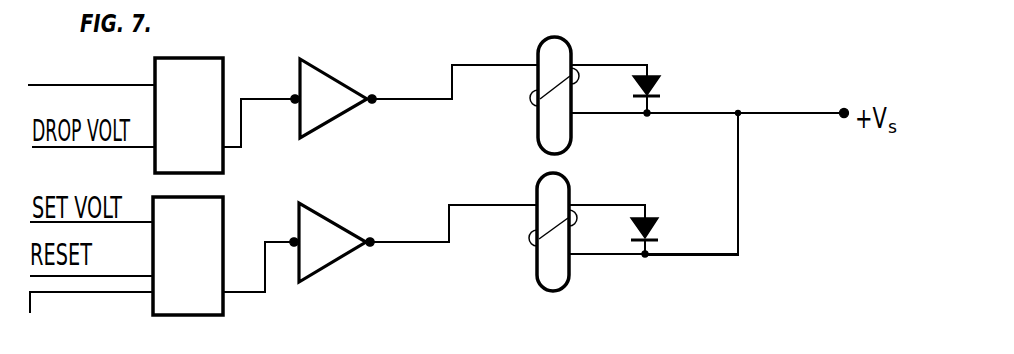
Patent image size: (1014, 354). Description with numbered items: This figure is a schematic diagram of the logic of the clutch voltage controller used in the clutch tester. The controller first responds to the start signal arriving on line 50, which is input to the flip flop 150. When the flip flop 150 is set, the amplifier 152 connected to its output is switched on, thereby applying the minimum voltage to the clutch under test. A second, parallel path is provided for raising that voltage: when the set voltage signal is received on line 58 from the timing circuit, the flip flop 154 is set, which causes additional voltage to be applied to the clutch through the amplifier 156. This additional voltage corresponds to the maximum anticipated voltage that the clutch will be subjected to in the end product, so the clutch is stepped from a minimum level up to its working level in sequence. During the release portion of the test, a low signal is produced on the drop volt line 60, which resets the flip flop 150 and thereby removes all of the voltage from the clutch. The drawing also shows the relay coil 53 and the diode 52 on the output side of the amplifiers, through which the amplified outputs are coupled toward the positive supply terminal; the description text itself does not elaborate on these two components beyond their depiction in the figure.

The line 50 is at (100, 85).
The diode / relay output 52 is at (664, 0).
The relay coil 53 is at (519, 7).
The line 58 is at (132, 222).
The drop volt line 60 is at (86, 148).
The flip flop 150 is at (194, 58).
The amplifier 152 is at (328, 70).
The flip flop 154 is at (223, 226).
The amplifier 156 is at (337, 218).